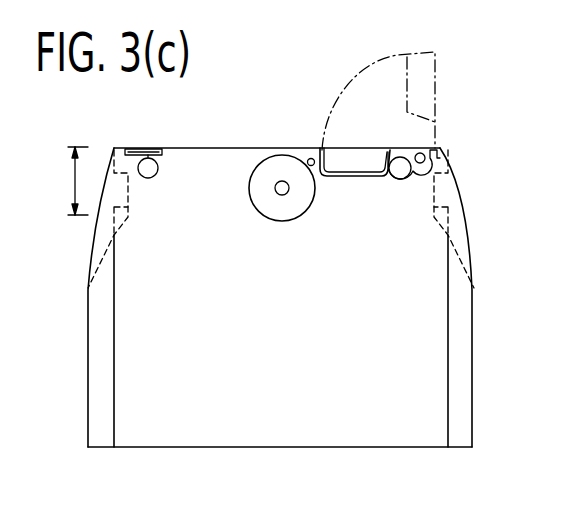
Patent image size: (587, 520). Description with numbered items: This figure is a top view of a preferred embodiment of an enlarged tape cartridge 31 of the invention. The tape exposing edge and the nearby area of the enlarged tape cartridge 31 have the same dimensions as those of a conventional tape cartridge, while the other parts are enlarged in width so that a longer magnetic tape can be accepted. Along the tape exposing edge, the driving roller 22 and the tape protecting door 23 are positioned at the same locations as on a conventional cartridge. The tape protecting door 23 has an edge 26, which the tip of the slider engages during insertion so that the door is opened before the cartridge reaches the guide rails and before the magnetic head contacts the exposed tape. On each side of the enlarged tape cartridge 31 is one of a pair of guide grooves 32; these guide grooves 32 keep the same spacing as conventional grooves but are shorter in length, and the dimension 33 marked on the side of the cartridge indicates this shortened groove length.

The driving roller 22 is at (258, 173).
The tape protecting door 23 is at (335, 158).
The edge 26 is at (437, 150).
The enlarged tape cartridge 31 is at (220, 423).
The guide grooves 32 is at (97, 213).
The height dimension 33 is at (73, 183).